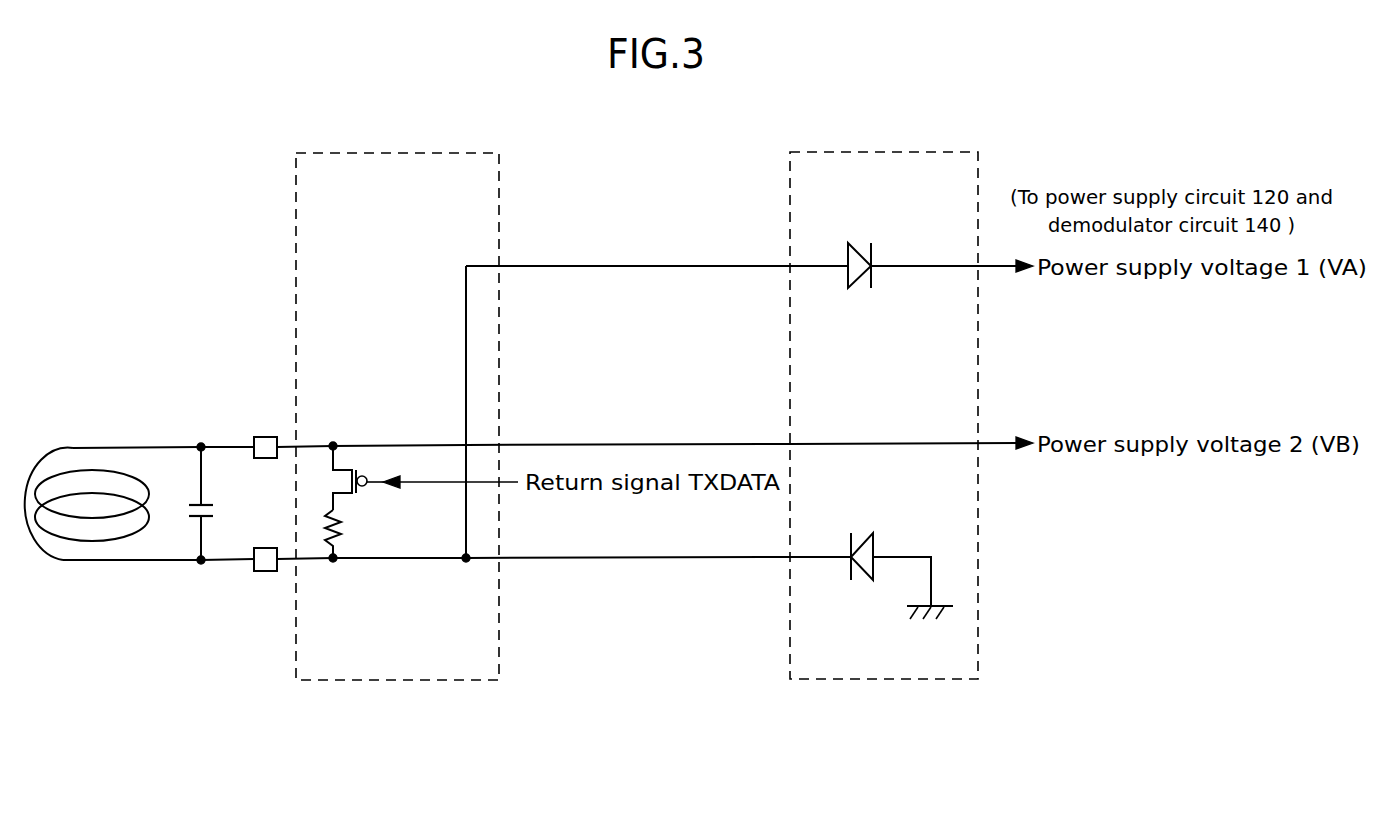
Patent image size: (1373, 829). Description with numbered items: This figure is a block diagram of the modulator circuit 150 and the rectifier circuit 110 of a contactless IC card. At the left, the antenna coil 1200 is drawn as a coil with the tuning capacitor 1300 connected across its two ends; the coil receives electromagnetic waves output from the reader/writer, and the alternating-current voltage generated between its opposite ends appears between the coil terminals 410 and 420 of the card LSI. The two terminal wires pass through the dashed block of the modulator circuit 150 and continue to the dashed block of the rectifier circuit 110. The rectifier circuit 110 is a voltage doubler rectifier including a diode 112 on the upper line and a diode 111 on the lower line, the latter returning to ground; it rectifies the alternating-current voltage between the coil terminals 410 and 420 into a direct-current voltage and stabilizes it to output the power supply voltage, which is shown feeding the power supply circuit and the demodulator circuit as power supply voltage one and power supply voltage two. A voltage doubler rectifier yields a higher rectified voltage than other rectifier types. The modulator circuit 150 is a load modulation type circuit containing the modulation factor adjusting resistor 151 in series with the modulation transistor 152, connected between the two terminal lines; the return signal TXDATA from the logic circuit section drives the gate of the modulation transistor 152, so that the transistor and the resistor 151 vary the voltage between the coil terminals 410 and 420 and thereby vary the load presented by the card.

The antenna coil 1200 is at (96, 446).
The tuning capacitor 1300 is at (201, 444).
The coil terminal 410 is at (268, 437).
The coil terminal 420 is at (265, 572).
The modulator circuit 150 is at (404, 151).
The rectifier circuit 110 is at (888, 150).
The diode 112 is at (851, 244).
The diode 111 is at (866, 580).
The modulation transistor 152 is at (345, 470).
The modulation factor adjusting resistor 151 is at (341, 526).